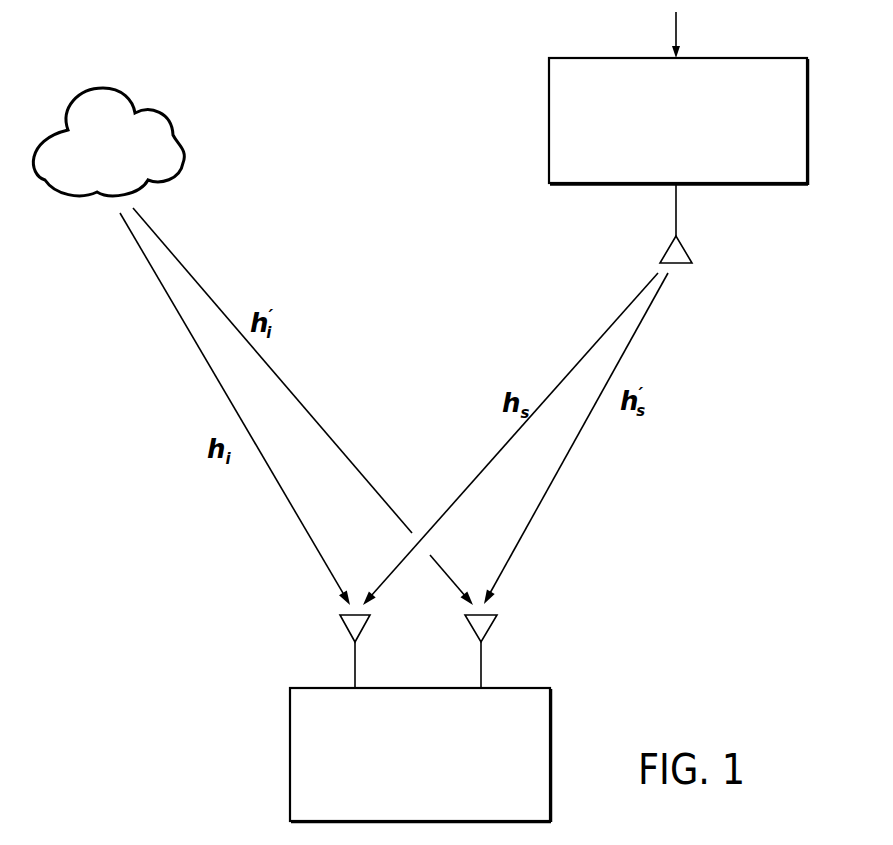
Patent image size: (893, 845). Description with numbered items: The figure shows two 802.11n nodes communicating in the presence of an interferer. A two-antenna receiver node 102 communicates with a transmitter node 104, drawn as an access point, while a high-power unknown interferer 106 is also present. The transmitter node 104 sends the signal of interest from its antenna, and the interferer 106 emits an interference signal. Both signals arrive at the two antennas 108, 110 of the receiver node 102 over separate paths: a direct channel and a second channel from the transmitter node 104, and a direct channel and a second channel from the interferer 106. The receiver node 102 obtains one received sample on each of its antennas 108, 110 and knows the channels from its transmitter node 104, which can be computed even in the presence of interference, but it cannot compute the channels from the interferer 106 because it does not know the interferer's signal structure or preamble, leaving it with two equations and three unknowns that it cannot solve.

The 802.11n receiver node 102 is at (290, 755).
The 802.11n transmitter node 104 is at (750, 58).
The interferer 106 is at (108, 88).
The antenna 108 is at (340, 618).
The antenna 110 is at (497, 616).